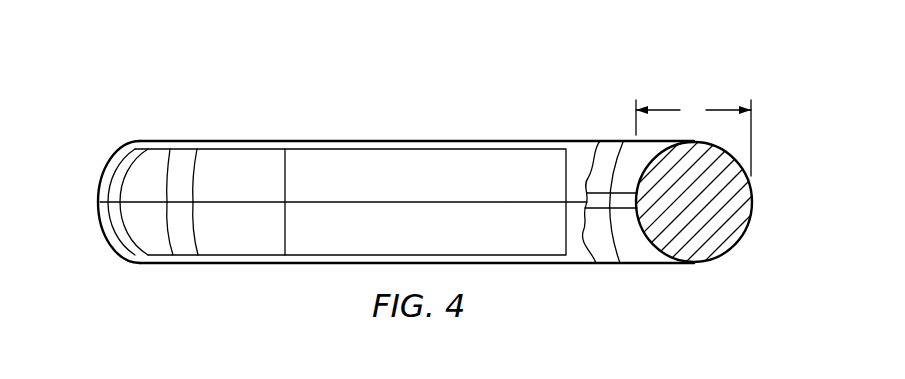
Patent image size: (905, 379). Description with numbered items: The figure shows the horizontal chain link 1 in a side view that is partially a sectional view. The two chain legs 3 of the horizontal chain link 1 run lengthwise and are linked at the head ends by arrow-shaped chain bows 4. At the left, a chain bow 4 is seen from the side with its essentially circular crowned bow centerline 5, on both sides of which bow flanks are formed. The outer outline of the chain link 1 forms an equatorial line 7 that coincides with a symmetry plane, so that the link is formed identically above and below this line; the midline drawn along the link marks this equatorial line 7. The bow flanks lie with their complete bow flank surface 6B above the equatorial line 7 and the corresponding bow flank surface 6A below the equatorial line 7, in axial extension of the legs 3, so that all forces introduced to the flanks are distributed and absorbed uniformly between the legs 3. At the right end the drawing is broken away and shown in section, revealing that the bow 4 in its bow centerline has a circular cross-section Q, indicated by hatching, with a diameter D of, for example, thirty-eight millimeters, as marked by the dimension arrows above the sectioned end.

The horizontal chain link 1 is at (242, 99).
The chain leg 3 is at (420, 166).
The chain bow 4 is at (92, 171).
The crowned bow centerline 5 is at (108, 223).
The bow flank surface below the equatorial line 6A is at (158, 238).
The bow flank surface above the equatorial line 6B is at (160, 165).
The equatorial line 7 is at (347, 200).
The circular cross-section Q is at (717, 232).
The diameter D is at (693, 138).